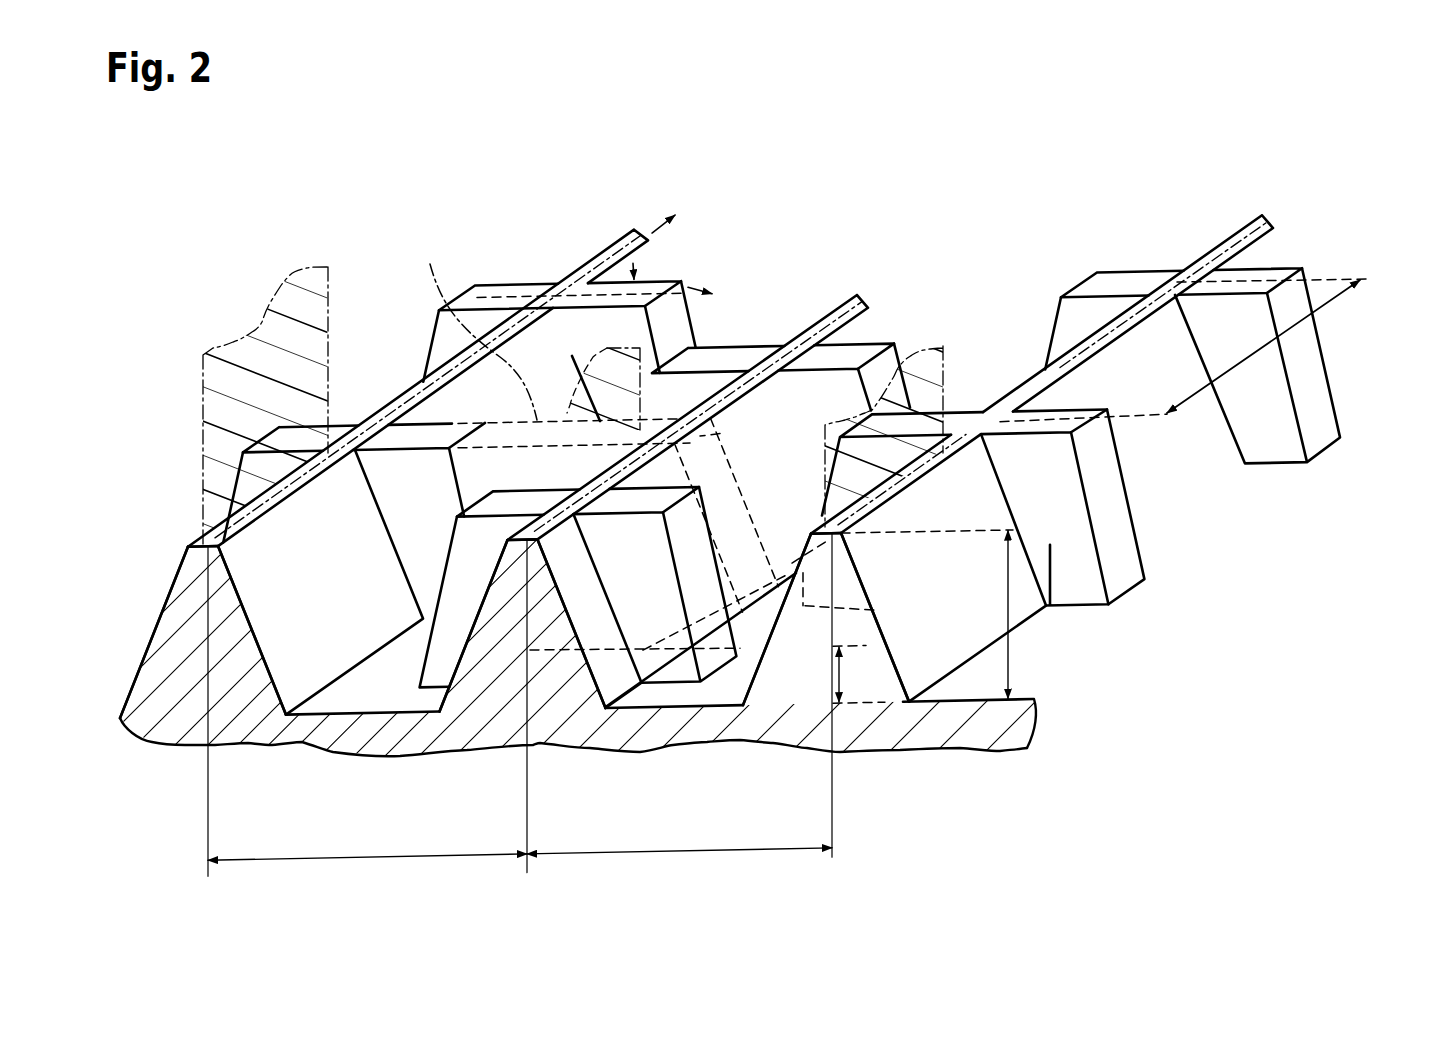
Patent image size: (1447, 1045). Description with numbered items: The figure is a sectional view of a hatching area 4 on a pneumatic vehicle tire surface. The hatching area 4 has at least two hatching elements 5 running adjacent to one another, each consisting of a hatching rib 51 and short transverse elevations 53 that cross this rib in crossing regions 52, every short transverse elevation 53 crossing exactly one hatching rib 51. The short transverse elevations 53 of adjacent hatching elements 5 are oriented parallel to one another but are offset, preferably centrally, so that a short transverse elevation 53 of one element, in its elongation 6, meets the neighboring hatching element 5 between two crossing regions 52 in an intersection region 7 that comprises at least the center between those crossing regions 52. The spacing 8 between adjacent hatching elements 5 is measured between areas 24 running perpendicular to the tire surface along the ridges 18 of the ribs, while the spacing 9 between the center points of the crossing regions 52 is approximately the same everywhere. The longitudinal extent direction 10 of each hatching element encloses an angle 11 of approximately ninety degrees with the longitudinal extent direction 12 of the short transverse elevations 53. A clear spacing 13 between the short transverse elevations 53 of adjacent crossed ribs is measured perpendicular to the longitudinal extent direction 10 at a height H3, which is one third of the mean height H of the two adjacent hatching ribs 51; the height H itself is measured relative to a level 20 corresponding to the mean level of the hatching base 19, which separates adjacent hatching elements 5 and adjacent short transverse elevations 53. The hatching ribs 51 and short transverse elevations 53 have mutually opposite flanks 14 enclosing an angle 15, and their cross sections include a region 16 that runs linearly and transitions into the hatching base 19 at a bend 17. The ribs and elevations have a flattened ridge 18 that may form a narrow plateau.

The hatching area 4 is at (1357, 152).
The hatching element 5 is at (672, 184).
The elongation 6 is at (479, 328).
The intersection region 7 is at (722, 433).
The spacing 8 is at (672, 852).
The spacing 9 is at (1300, 324).
The longitudinal extent direction 10 is at (625, 230).
The angle 11 is at (633, 264).
The longitudinal extent direction 12 is at (685, 280).
The clear spacing 13 is at (720, 703).
The flanks 14 is at (256, 643).
The angle 15 is at (710, 552).
The region which runs linearly 16 is at (1050, 548).
The bend 17 is at (1068, 601).
The ridge 18 is at (207, 538).
The hatching base 19 is at (762, 600).
The level 20 is at (893, 700).
The areas 24 is at (287, 305).
The hatching rib 51 is at (582, 272).
The crossing region 52 is at (556, 278).
The short transverse elevation 53 is at (687, 316).
The height H is at (937, 615).
The height H3 is at (859, 674).